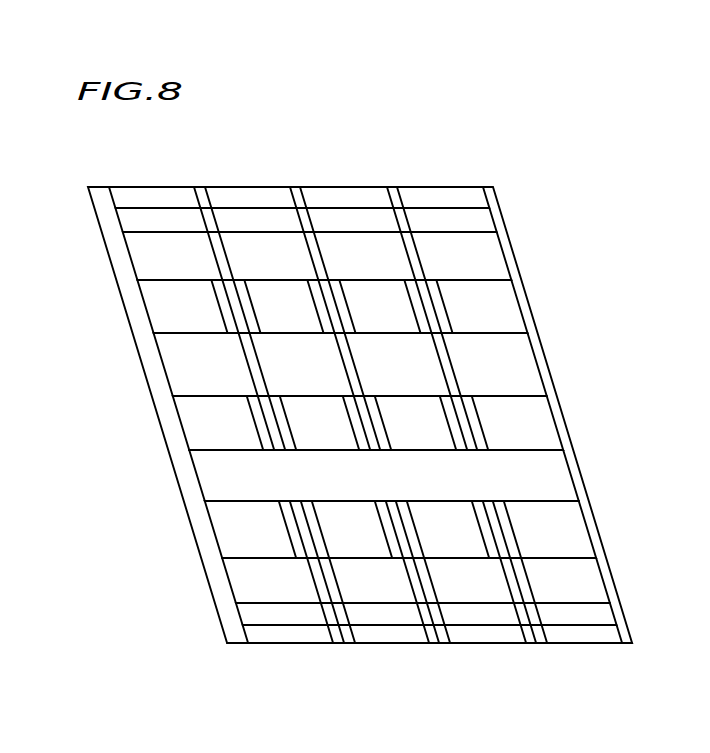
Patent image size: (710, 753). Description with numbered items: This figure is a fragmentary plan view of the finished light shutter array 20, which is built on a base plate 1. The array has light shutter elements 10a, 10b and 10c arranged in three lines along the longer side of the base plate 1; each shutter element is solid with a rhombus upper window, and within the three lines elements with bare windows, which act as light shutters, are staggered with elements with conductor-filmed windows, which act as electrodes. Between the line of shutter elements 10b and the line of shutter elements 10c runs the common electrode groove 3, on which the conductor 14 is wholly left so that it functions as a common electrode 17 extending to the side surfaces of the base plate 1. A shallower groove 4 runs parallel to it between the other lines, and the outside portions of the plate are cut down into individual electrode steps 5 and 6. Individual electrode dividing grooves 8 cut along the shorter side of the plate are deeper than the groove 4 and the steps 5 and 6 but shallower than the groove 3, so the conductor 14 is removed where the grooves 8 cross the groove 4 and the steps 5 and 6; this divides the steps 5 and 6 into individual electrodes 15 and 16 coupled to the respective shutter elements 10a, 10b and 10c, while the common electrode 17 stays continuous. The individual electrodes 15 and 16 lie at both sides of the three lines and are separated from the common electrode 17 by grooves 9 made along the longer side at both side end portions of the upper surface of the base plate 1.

The light shutter array 20 is at (494, 166).
The base plate 1 is at (236, 647).
The common electrode groove 3 is at (222, 487).
The groove 4 is at (160, 347).
The individual electrode step 5 is at (142, 270).
The individual electrode step 6 is at (245, 578).
The individual electrode dividing groove 8 is at (232, 612).
The groove 9 is at (483, 212).
The shutter element 10a is at (180, 293).
The shutter element 10b is at (293, 403).
The shutter element 10c is at (232, 527).
The conductor 14 is at (572, 466).
The individual electrode 15 is at (150, 232).
The individual electrode 16 is at (273, 603).
The common electrode 17 is at (212, 472).